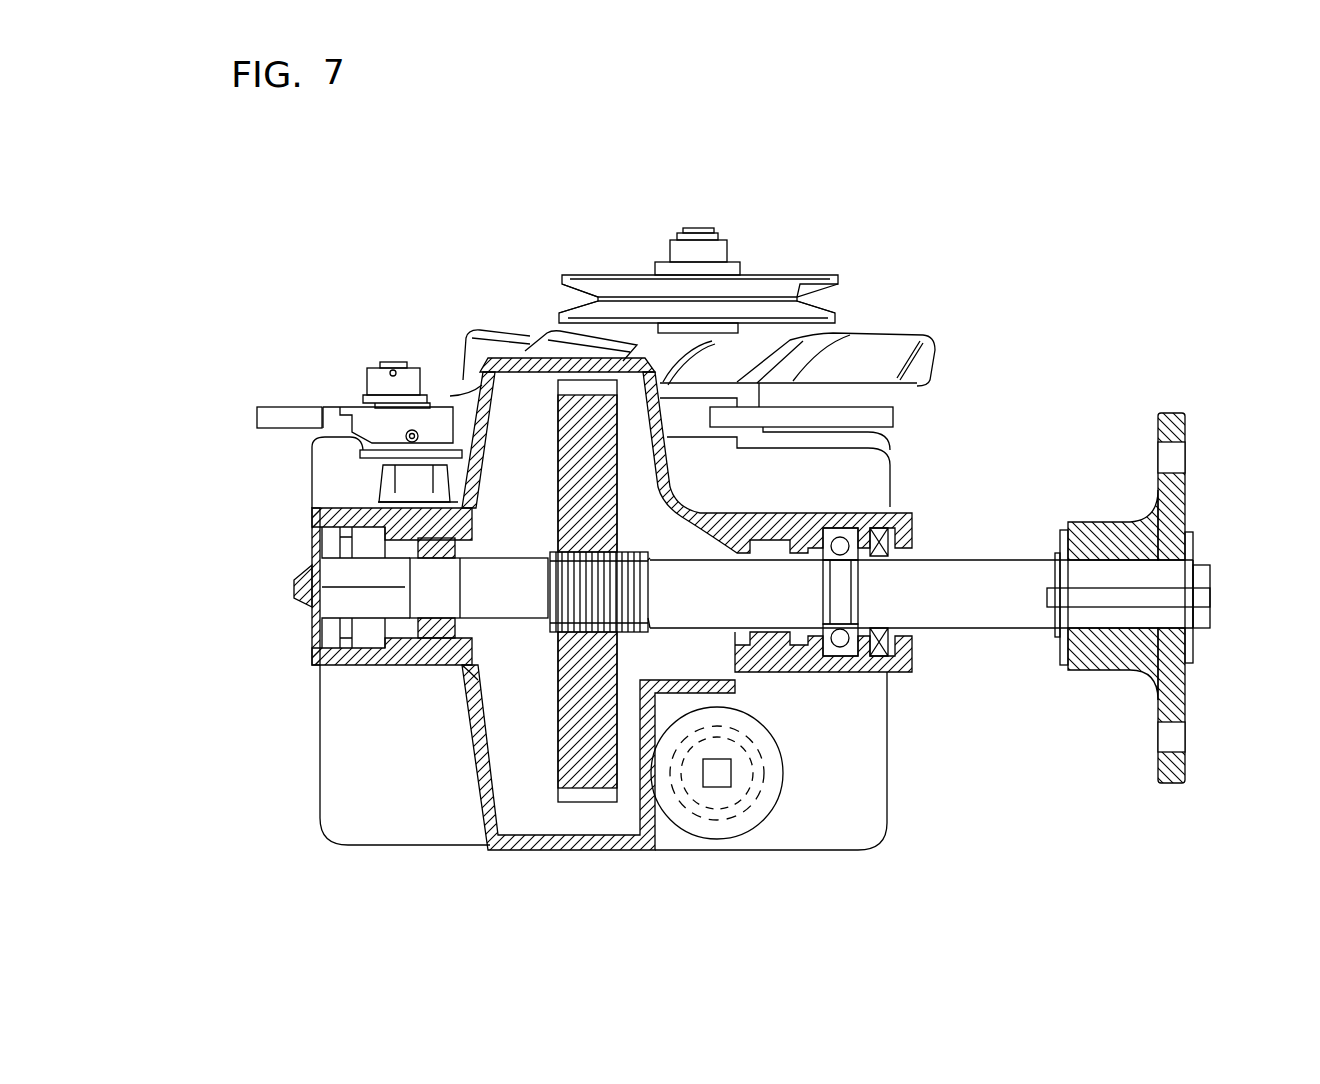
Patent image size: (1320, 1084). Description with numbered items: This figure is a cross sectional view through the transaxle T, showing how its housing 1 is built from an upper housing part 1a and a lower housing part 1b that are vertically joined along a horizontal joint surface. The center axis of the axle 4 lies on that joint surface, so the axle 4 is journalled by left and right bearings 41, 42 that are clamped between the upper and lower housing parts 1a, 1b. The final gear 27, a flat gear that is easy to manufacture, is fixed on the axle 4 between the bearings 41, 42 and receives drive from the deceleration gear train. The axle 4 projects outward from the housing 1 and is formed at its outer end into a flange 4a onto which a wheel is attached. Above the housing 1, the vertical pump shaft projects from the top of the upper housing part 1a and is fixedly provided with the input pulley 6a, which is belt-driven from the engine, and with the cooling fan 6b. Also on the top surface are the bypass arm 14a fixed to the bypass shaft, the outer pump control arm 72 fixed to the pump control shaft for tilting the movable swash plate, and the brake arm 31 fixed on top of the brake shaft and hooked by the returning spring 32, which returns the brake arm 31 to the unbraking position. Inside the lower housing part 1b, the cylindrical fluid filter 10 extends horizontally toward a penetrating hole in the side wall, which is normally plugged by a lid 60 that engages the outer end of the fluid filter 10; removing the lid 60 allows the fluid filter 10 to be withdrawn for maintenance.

The housing 1 is at (605, 604).
The upper housing part 1a is at (912, 525).
The lower housing part 1b is at (905, 672).
The axle 4 is at (990, 612).
The flange 4a is at (1172, 412).
The input pulley 6a is at (818, 277).
The cooling fan 6b is at (933, 353).
The fluid filter 10 is at (762, 758).
The bypass arm 14a is at (368, 376).
The final gear 27 is at (566, 516).
The brake arm 31 is at (290, 405).
The returning spring 32 is at (348, 445).
The bearing 41 is at (838, 658).
The bearing 42 is at (430, 636).
The lid 60 is at (775, 796).
The outer pump control arm 72 is at (893, 418).
The transaxle T is at (1147, 297).